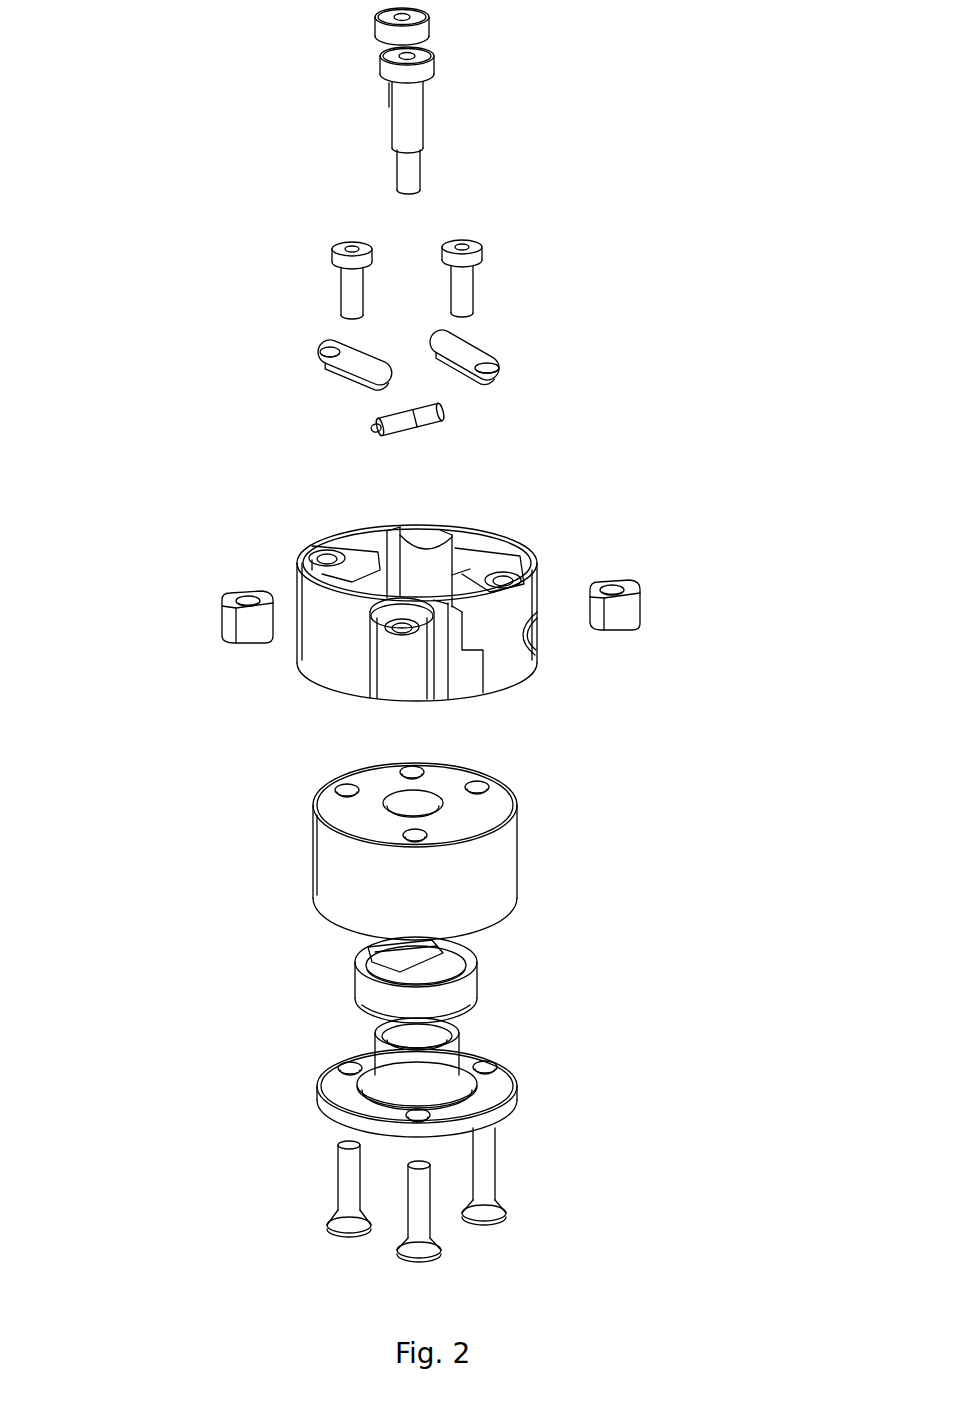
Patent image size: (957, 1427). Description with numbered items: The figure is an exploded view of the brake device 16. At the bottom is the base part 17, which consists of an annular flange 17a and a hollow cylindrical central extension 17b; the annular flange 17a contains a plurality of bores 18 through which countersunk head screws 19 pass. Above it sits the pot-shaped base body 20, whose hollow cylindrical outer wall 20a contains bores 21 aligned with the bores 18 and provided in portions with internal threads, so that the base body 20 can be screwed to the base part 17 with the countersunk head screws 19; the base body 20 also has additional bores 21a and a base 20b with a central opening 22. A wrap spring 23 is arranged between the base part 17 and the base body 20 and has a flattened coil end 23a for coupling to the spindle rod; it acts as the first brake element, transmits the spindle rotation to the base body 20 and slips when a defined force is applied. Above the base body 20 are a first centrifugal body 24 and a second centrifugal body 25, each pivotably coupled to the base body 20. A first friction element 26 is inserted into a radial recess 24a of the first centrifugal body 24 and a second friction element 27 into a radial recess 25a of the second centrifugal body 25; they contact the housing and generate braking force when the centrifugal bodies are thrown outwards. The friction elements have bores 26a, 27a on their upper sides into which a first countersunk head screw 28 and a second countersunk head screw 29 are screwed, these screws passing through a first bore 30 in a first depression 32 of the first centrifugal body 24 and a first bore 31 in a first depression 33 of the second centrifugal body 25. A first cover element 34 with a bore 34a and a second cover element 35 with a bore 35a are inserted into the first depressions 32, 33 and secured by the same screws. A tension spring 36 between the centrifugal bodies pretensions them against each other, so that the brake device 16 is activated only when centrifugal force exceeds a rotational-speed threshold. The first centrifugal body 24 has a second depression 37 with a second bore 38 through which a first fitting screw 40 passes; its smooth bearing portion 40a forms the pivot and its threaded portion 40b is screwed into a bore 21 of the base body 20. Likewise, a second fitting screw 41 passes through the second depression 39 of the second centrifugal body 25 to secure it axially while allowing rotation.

The brake device 16 is at (598, 502).
The base part 17 is at (428, 1069).
The annular flange 17a is at (330, 1090).
The hollow cylindrical central extension 17b is at (378, 1063).
The bores 18 is at (495, 1060).
The countersunk head screws 19 is at (422, 1223).
The base body 20 is at (409, 834).
The hollow cylindrical outer wall 20a is at (335, 870).
The base 20b is at (490, 812).
The bores 21 is at (463, 787).
The additional bores 21a is at (423, 772).
The central opening 22 is at (410, 808).
The wrap spring 23 is at (415, 980).
The coil end 23a is at (407, 952).
The first centrifugal body 24 is at (351, 620).
The radial recess 24a is at (300, 608).
The second centrifugal body 25 is at (546, 599).
The radial recess 25a is at (517, 617).
The first friction element 26 is at (169, 634).
The bore 26a is at (237, 603).
The second friction element 27 is at (677, 617).
The bore 27a is at (625, 588).
The first countersunk head screw 28 is at (352, 268).
The second countersunk head screw 29 is at (460, 288).
The first bore 30 is at (307, 553).
The first bore 31 is at (503, 582).
The first depression 32 is at (347, 567).
The first depression 33 is at (488, 572).
The first cover element 34 is at (277, 372).
The bore 34a is at (315, 348).
The second cover element 35 is at (515, 382).
The bore 35a is at (503, 360).
The tension spring 36 is at (413, 413).
The second depression 37 is at (380, 632).
The second bore 38 is at (402, 628).
The second depression 39 is at (425, 537).
The first fitting screw 40 is at (402, 121).
The smooth bearing portion 40a is at (397, 128).
The threaded portion 40b is at (402, 176).
The second fitting screw 41 is at (395, 17).